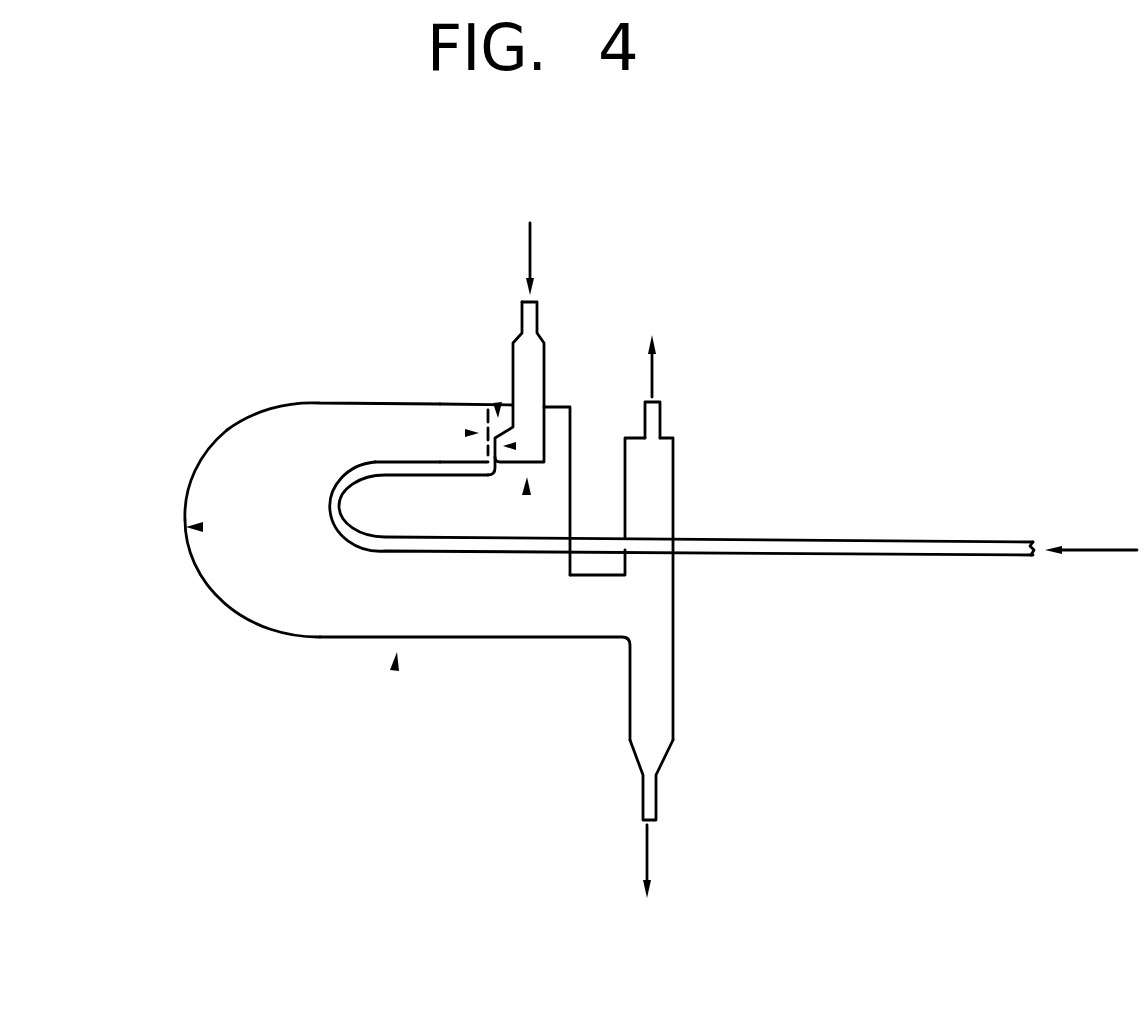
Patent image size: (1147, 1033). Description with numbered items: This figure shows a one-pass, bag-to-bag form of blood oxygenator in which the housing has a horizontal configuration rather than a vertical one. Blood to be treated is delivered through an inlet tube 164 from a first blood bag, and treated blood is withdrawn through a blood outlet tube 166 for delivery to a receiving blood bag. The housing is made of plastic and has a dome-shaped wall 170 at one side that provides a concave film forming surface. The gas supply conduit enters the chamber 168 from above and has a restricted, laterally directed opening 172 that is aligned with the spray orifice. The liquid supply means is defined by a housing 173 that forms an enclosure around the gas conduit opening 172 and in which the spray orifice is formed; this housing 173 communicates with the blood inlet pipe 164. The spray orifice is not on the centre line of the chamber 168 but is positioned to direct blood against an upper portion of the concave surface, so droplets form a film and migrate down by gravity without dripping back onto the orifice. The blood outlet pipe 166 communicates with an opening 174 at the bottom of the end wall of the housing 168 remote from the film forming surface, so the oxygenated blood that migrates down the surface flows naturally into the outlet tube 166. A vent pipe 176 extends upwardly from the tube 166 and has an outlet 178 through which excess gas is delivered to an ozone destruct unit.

The tube 164 is at (930, 545).
The outlet 166 is at (655, 732).
The chamber 168 is at (293, 563).
The dome-shaped wall 170 is at (188, 490).
The laterally directed opening 172 is at (514, 446).
The housing 173 is at (490, 406).
The opening 174 is at (570, 607).
The vent pipe 176 is at (653, 488).
The outlet 178 is at (660, 418).